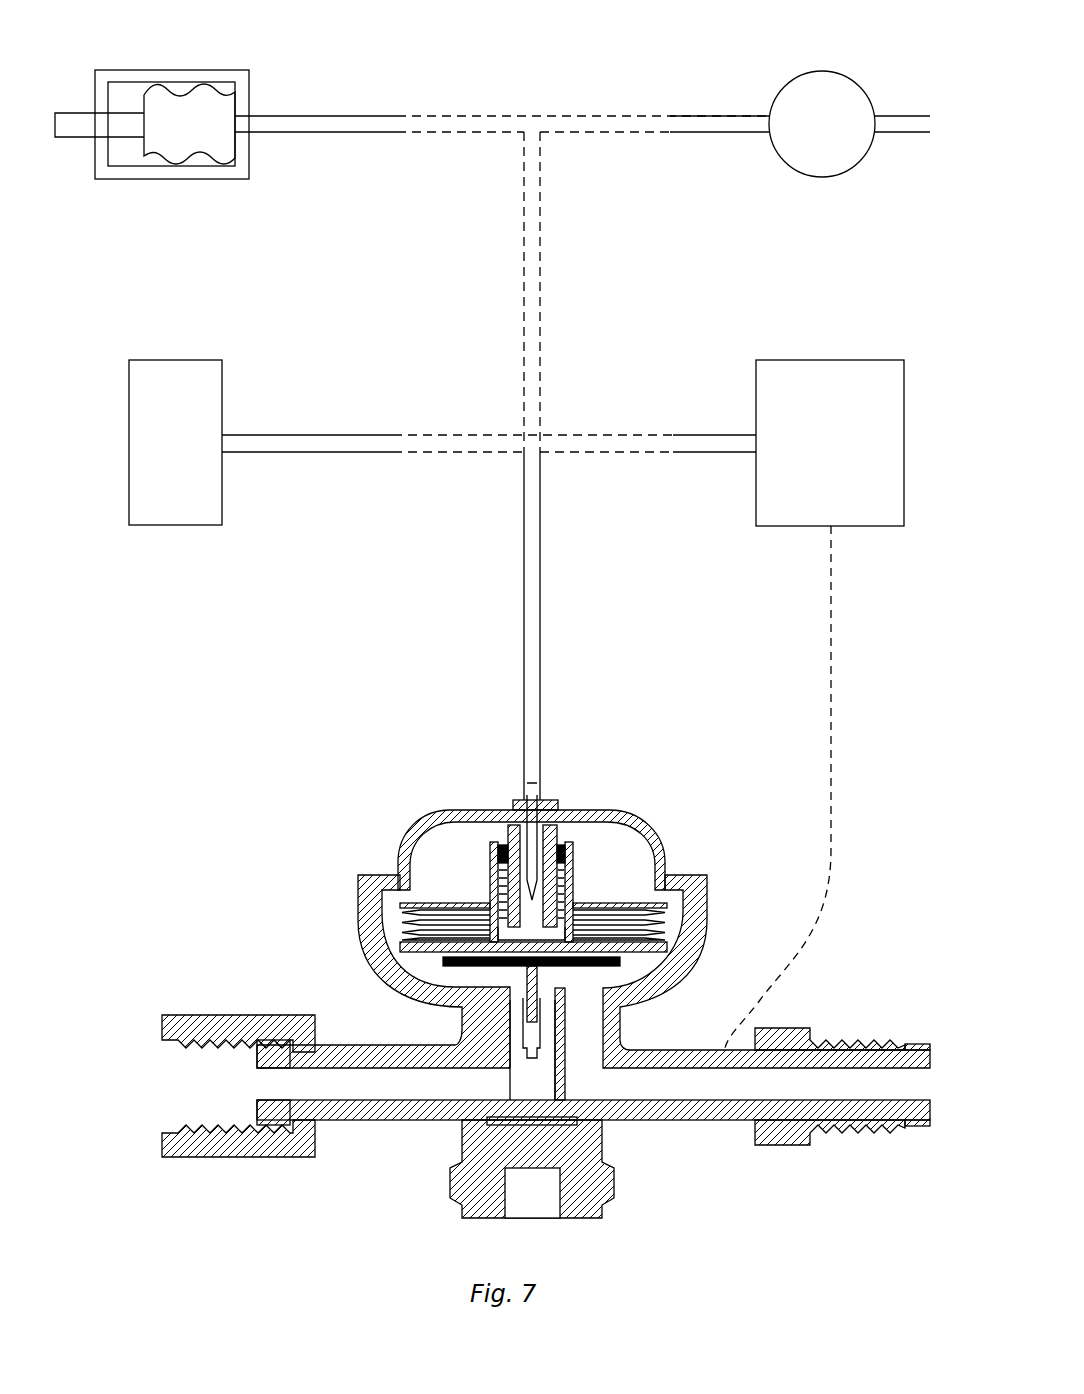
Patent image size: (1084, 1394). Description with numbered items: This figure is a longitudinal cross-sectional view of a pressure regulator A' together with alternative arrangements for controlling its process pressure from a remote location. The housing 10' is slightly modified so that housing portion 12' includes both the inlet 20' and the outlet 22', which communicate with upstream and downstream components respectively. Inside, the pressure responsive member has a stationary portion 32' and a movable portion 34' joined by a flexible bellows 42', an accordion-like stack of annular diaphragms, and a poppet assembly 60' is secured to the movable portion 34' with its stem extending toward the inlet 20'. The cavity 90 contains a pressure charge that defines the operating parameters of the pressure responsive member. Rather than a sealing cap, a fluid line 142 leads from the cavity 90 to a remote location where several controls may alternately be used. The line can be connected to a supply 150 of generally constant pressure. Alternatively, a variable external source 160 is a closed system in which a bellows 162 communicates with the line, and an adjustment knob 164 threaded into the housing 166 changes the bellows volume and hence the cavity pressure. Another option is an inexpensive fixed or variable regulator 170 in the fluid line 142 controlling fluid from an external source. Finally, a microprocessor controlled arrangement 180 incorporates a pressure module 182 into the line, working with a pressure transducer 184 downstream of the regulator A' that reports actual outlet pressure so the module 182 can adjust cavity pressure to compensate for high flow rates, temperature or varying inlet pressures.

The variable external source 160 is at (213, 193).
The bellows 162 is at (203, 97).
The adjustment knob 164 is at (77, 133).
The housing 166 is at (133, 73).
The regulator 170 is at (770, 170).
The supply 150 is at (172, 520).
The microprocessor controlled arrangement 180 is at (763, 540).
The microprocessor controlled pressure module 182 is at (857, 510).
The fluid line 142 is at (524, 632).
The regulator A' is at (345, 785).
The stationary portion of the pressure responsive member 32' is at (531, 816).
The cavity 90 is at (628, 872).
The bellows 42' is at (480, 900).
The movable portion of the pressure responsive member 34' is at (493, 967).
The housing portion 12' is at (593, 971).
The housing 10' is at (754, 859).
The inlet 20' is at (546, 1072).
The outlet 22' is at (690, 1114).
The poppet assembly 60' is at (480, 1033).
The pressure transducer 184 is at (740, 1043).